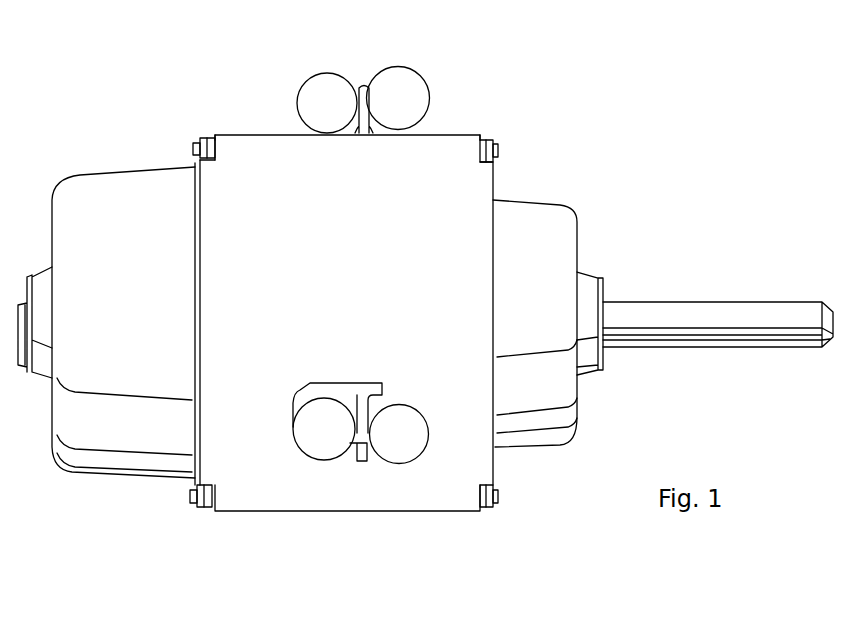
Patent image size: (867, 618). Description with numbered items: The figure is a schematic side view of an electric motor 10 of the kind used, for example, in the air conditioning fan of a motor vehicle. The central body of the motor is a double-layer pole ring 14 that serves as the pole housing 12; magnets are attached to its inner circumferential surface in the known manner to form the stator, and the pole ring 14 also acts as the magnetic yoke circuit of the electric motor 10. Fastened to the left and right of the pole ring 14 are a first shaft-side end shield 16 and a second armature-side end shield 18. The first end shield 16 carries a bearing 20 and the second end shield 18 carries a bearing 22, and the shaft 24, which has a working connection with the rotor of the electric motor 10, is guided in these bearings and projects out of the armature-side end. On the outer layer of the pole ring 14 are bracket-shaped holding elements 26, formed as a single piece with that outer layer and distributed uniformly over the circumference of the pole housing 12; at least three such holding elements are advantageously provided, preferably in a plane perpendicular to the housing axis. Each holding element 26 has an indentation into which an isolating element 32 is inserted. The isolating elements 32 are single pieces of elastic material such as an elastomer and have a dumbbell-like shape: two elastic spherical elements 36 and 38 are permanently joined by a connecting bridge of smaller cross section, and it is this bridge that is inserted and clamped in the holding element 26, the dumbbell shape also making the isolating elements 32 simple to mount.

The electric motor 10 is at (576, 135).
The pole housing 12 is at (252, 488).
The pole ring 14 is at (238, 152).
The first shaft-side end shield 16 is at (105, 438).
The second armature-side end shield 18 is at (558, 237).
The bearing 20 is at (42, 357).
The bearing 22 is at (585, 357).
The shaft 24 is at (723, 313).
The bracket-shaped holding element 26 is at (365, 83).
The isolating element 32 is at (422, 61).
The elastic spherical element 36 is at (315, 100).
The elastic spherical element 38 is at (405, 447).